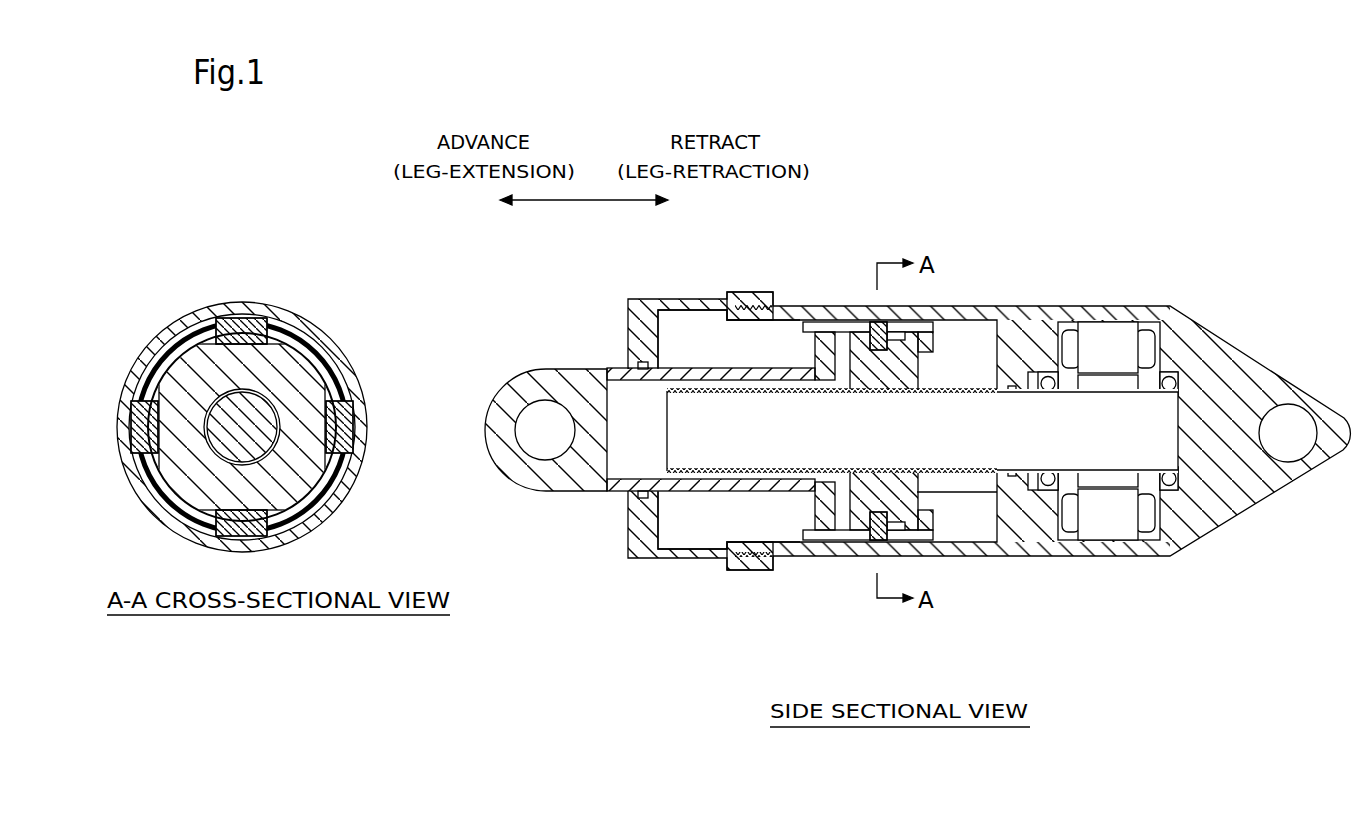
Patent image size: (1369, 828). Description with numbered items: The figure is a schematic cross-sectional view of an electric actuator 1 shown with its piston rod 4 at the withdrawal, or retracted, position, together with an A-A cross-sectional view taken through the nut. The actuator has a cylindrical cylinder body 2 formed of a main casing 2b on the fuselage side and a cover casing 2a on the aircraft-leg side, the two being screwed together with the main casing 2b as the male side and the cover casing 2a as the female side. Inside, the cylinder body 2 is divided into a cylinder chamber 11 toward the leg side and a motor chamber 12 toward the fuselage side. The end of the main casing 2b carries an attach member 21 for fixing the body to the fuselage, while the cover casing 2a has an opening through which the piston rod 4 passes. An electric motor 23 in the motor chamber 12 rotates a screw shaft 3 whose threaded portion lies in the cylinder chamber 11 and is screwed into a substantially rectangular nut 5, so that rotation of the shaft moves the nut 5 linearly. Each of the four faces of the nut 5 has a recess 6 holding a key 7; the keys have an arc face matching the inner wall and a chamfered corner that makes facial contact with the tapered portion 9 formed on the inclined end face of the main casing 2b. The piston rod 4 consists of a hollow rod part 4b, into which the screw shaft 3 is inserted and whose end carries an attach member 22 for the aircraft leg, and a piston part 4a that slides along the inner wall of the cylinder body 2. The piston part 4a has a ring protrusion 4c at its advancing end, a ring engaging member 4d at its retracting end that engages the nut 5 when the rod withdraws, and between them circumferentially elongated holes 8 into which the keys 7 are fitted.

The electric actuator 1 is at (1246, 134).
The cylinder body 2 is at (969, 302).
The cover casing 2a is at (662, 300).
The main casing 2b is at (1035, 307).
The screw shaft 3 is at (797, 452).
The piston rod 4 is at (690, 494).
The piston part 4a is at (833, 330).
The rod part 4b is at (568, 492).
The ring protrusion 4c is at (804, 541).
The ring engaging member 4d is at (930, 528).
The nut 5 is at (925, 492).
The recess 6 is at (905, 312).
The key 7 is at (871, 325).
The hole 8 is at (896, 336).
The tapered portion 9 is at (728, 313).
The cylinder chamber 11 is at (786, 318).
The motor chamber 12 is at (1158, 332).
The attach member 21 is at (1303, 428).
The attach member 22 is at (543, 440).
The electric motor 23 is at (1112, 335).